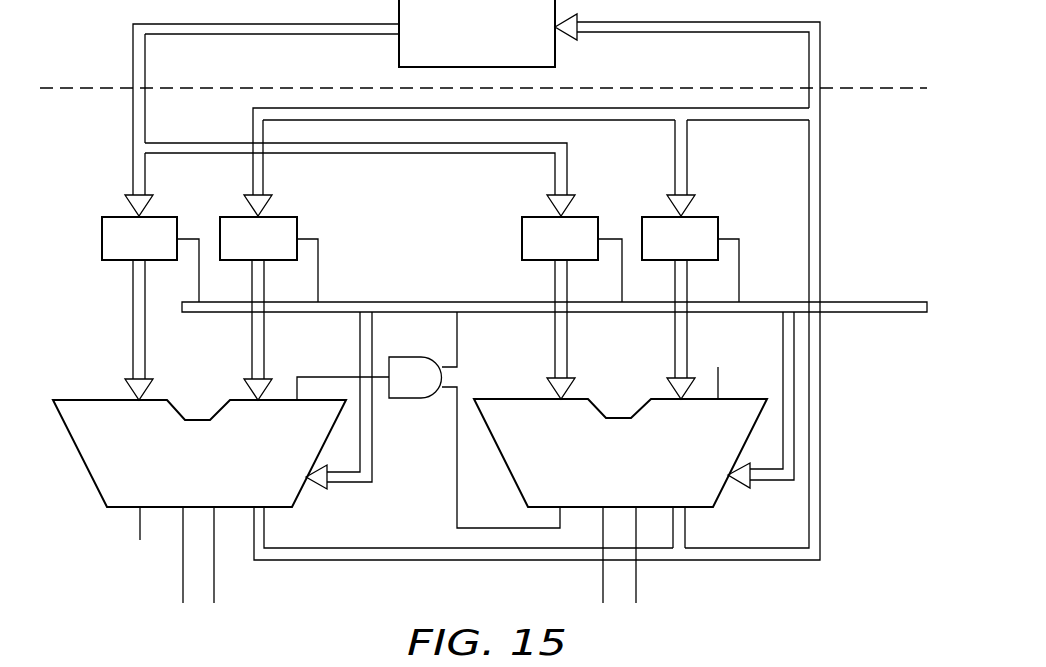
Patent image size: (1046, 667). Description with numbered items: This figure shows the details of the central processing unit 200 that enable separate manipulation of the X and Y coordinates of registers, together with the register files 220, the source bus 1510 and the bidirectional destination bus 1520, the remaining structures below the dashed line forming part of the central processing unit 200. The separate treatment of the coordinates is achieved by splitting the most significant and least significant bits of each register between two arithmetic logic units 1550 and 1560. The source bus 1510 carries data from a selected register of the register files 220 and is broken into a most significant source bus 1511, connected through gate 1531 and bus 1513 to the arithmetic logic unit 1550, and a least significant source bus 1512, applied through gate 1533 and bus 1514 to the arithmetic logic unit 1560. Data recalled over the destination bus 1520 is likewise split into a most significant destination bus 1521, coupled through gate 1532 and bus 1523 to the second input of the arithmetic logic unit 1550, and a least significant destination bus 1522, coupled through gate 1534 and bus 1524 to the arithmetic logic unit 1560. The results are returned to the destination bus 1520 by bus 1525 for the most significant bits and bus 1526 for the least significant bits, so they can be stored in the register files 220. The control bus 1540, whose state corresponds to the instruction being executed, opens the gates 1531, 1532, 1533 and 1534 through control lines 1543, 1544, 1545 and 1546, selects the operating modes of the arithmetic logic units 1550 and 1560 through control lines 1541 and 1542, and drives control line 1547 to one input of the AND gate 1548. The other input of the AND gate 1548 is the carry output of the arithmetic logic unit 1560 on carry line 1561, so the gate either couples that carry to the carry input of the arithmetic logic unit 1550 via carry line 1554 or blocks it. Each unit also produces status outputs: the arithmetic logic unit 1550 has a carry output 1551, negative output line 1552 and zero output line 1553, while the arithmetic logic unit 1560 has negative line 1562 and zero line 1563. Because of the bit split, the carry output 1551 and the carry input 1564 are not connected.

The central processing unit 200 is at (105, 150).
The register files 220 is at (396, 50).
The source bus 1510 is at (133, 45).
The most significant source bus 1511 is at (133, 175).
The least significant source bus 1512 is at (408, 154).
The bus 1513 is at (133, 352).
The bus 1514 is at (555, 290).
The destination bus 1520 is at (822, 61).
The most significant destination bus 1521 is at (253, 127).
The least significant destination bus 1522 is at (675, 167).
The bus 1523 is at (252, 350).
The bus 1524 is at (675, 349).
The bus 1525 is at (430, 547).
The bus 1526 is at (688, 526).
The gate 1531 is at (110, 262).
The gate 1532 is at (283, 215).
The gate 1533 is at (527, 215).
The gate 1534 is at (705, 215).
The control bus 1540 is at (886, 314).
The control lines 1541 is at (353, 485).
The control lines 1542 is at (783, 338).
The control line 1543 is at (199, 226).
The control line 1544 is at (320, 260).
The control line 1545 is at (622, 227).
The control line 1546 is at (741, 262).
The control line 1547 is at (457, 342).
The AND gate 1548 is at (425, 400).
The arithmetic logic unit 1550 is at (195, 418).
The carry output 1551 is at (138, 522).
The negative output line 1552 is at (181, 585).
The zero output line 1553 is at (216, 585).
The carry line 1554 is at (330, 376).
The arithmetic logic unit 1560 is at (618, 417).
The carry line 1561 is at (457, 462).
The negative line 1562 is at (601, 585).
The zero line 1563 is at (638, 585).
The carry input 1564 is at (720, 392).